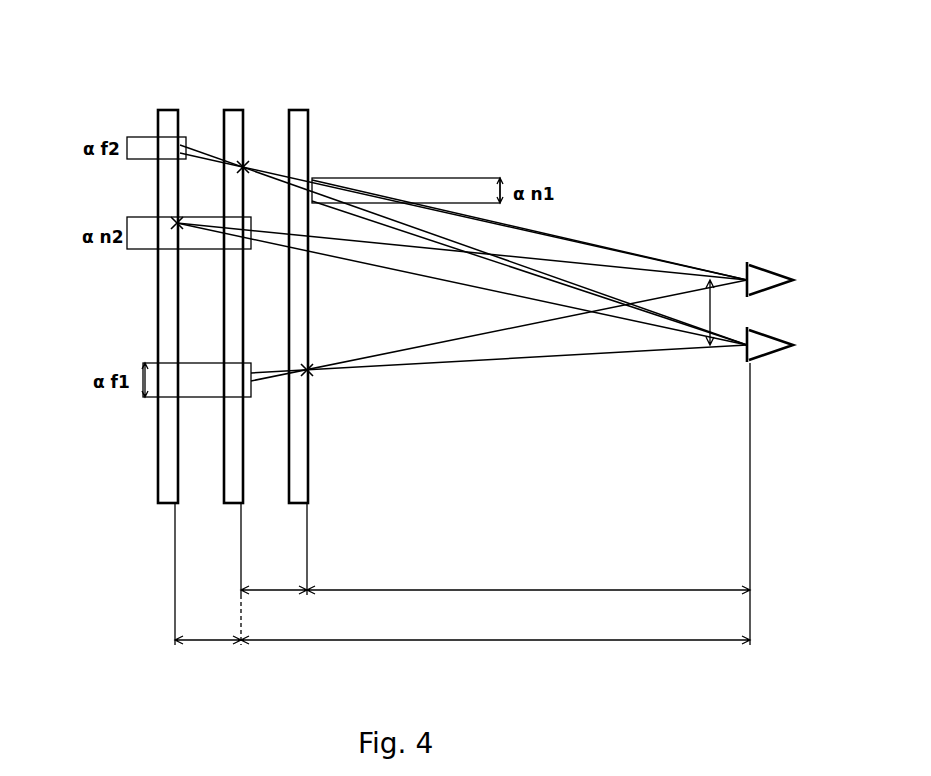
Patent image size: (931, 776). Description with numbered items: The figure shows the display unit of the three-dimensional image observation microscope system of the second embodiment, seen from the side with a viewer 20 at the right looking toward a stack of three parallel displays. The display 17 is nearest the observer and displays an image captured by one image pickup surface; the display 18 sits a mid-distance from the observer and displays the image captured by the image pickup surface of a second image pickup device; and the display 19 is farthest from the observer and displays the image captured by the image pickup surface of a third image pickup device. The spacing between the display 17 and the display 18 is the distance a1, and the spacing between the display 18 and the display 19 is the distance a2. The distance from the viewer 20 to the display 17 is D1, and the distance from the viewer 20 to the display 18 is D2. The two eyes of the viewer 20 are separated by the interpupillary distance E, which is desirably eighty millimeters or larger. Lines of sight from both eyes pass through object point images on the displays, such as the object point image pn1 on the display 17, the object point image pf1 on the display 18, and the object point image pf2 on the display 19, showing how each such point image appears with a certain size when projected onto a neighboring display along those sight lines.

The display 17 is at (302, 482).
The display 18 is at (222, 500).
The display 19 is at (157, 497).
The viewer 20 is at (788, 312).
The interpupillary distance E is at (720, 312).
The distance between viewer and display 17 D1 is at (528, 581).
The distance between viewer and display 18 D2 is at (495, 631).
The distance between display 17 and display 18 a1 is at (274, 574).
The distance between displays 18 and 19 a2 is at (208, 627).
The object point image pf1 is at (244, 164).
The object point image pf2 is at (175, 221).
The object point image pn1 is at (309, 372).